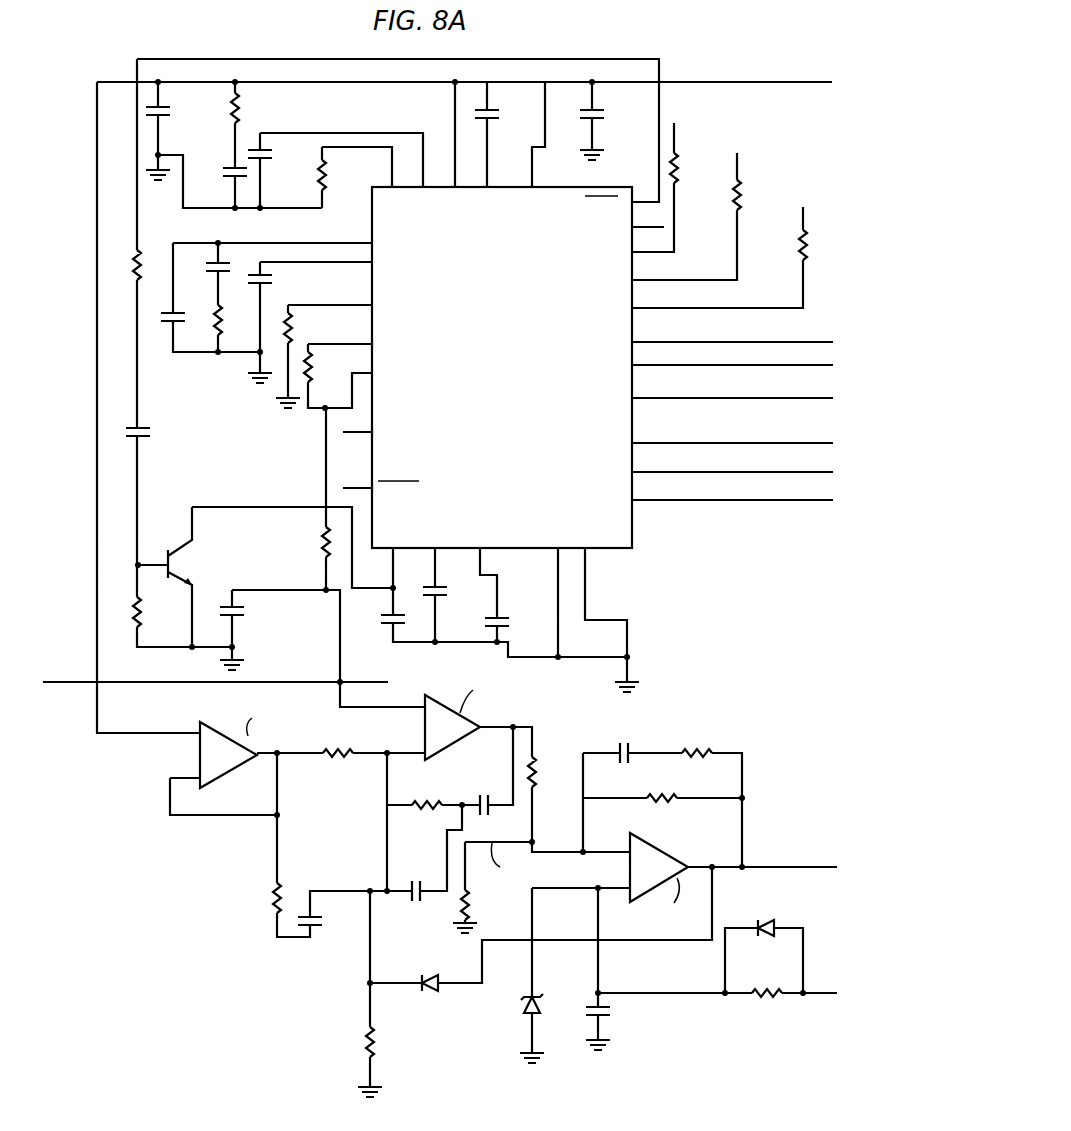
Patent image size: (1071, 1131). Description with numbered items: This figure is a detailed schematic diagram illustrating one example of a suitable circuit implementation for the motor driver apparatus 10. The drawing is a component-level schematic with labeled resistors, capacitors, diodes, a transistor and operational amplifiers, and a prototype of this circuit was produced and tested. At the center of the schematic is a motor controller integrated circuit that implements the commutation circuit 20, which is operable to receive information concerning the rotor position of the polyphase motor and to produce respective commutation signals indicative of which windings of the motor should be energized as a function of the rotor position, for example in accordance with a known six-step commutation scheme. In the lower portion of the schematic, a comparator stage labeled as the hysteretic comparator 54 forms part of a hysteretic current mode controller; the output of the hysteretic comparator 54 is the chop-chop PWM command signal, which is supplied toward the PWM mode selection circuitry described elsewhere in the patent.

The motor driver apparatus 10 is at (150, 1009).
The commutation circuit 20 is at (522, 429).
The hysteretic comparator 54 is at (670, 852).